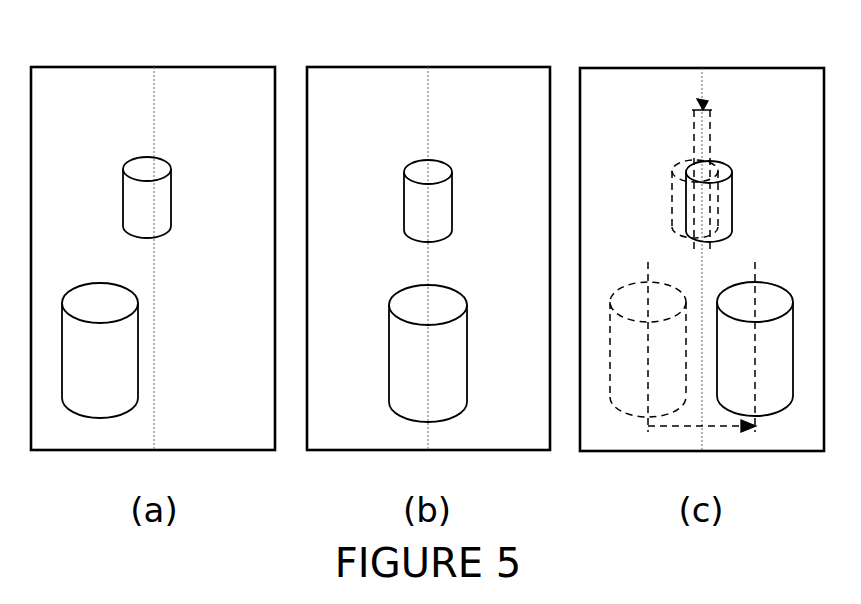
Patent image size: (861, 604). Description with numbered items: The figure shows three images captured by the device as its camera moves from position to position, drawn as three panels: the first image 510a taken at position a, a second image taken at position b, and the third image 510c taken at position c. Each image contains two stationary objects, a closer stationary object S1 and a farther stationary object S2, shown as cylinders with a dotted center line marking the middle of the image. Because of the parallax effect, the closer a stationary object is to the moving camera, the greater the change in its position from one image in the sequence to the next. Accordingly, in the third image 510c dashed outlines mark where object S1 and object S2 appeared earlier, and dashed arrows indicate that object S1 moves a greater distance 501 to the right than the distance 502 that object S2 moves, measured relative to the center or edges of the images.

The display area (state a) 510a is at (215, 67).
The display area (state c) 510c is at (687, 68).
The distance 502 is at (706, 102).
The distance 501 is at (725, 428).
The stationary object S1 is at (427, 347).
The stationary object S2 is at (427, 199).